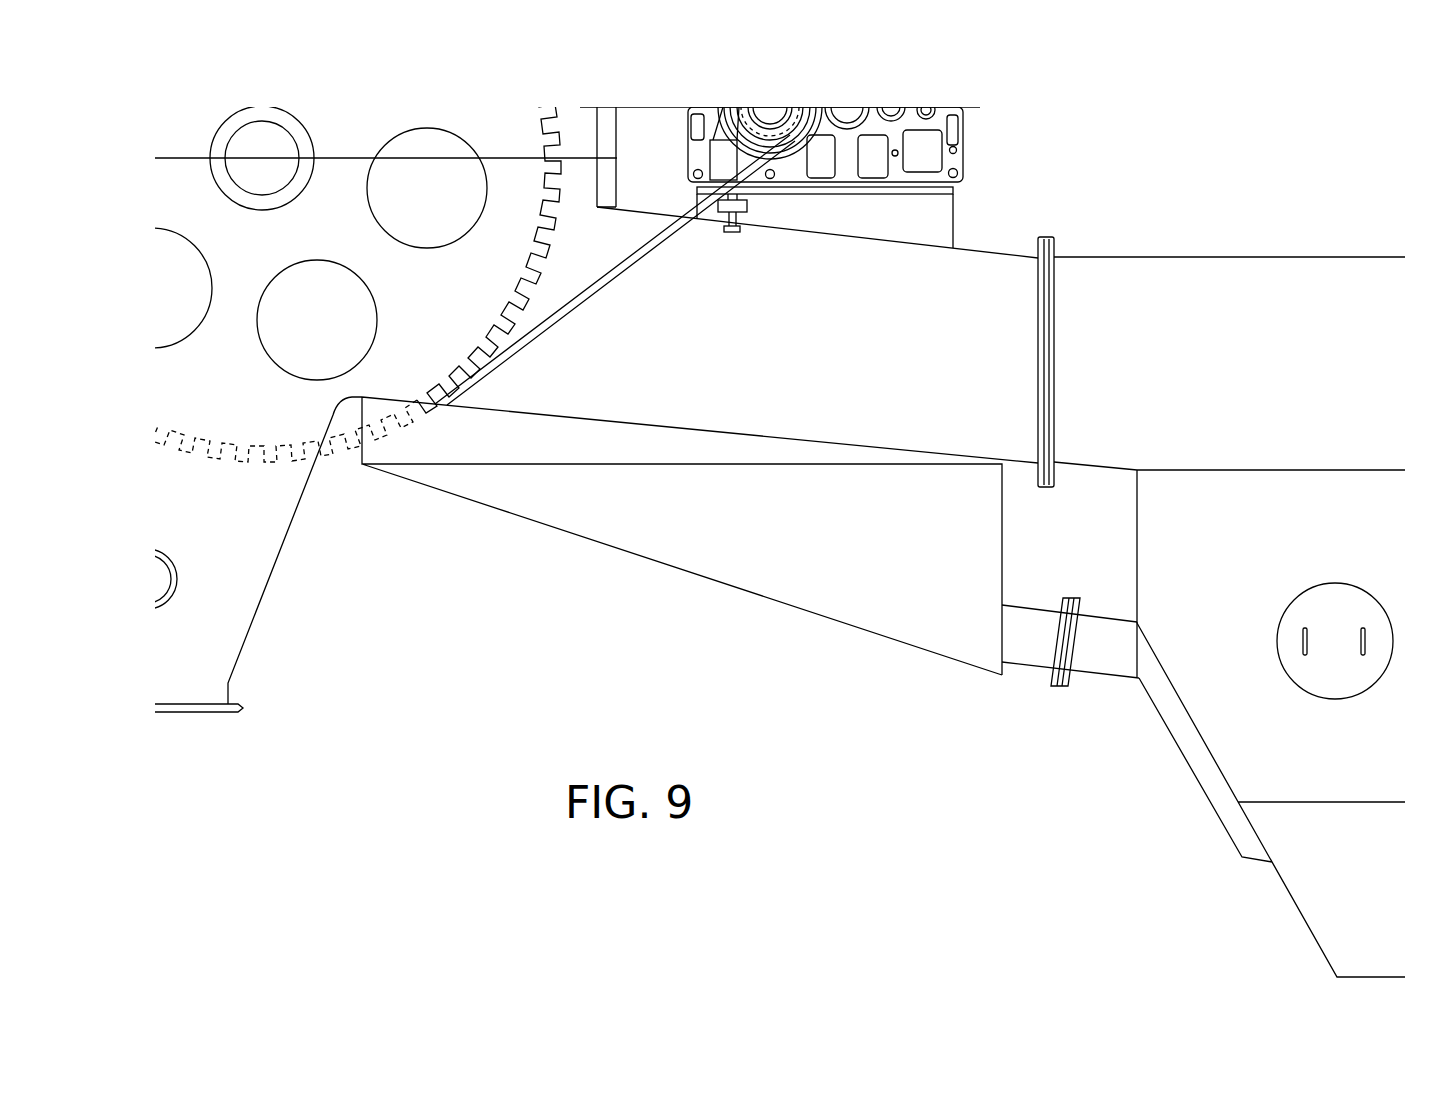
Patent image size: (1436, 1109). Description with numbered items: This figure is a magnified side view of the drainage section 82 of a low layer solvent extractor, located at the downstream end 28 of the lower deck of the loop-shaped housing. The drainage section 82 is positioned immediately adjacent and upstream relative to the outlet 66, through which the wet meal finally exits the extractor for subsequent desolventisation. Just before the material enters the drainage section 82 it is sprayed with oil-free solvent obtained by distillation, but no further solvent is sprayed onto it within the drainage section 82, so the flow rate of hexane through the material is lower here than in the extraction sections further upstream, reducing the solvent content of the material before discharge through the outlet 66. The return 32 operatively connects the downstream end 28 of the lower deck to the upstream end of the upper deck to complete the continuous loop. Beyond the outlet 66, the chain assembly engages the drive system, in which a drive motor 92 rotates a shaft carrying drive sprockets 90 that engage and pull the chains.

The downstream end of the lower deck 28 is at (1163, 293).
The return 32 is at (972, 287).
The outlet 66 is at (192, 712).
The drainage section 82 is at (615, 507).
The drive sprockets 90 is at (322, 452).
The drive motor 92 is at (953, 162).